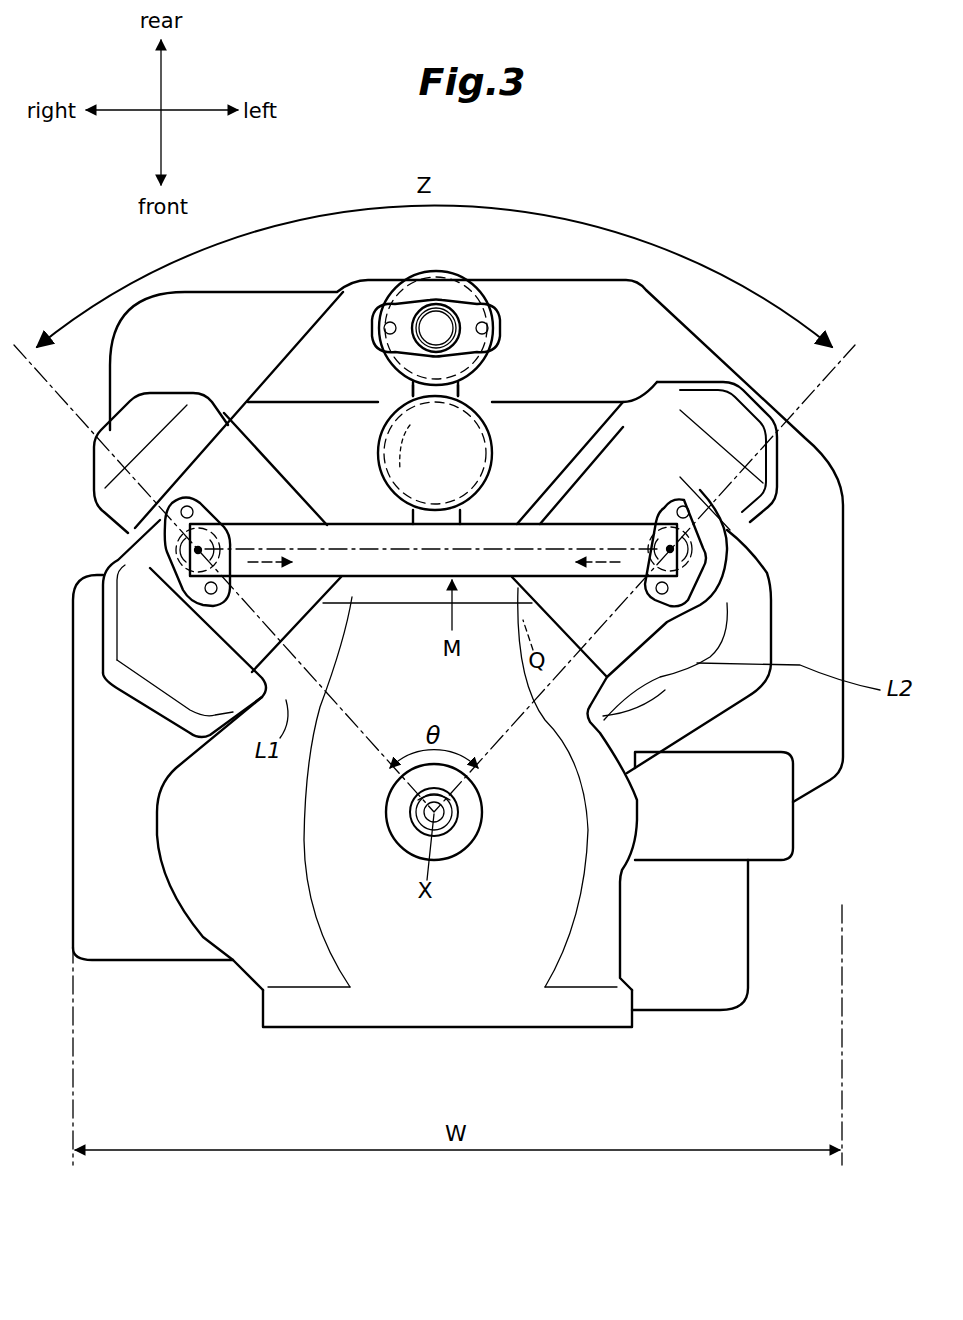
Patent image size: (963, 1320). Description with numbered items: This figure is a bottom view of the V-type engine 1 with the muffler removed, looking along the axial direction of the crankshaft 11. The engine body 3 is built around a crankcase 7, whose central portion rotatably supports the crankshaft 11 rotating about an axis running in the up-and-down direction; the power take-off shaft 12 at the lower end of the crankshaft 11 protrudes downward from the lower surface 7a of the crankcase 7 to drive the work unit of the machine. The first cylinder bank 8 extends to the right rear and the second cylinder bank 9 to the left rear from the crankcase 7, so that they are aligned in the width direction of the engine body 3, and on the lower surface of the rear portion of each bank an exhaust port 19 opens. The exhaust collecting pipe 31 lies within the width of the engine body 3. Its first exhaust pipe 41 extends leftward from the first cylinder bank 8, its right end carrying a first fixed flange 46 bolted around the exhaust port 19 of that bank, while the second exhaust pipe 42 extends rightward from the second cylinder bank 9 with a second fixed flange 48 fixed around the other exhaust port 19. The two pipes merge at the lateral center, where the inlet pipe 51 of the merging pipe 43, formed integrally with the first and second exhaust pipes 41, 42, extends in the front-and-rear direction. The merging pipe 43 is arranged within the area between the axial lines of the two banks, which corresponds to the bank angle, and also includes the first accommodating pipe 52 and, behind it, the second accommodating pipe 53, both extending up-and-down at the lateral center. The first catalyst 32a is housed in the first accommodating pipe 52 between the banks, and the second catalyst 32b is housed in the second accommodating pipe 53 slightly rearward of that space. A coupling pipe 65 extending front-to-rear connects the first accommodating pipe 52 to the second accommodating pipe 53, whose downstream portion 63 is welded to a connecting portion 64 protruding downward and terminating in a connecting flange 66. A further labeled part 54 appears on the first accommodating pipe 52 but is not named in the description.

The engine 1 is at (863, 480).
The engine body 3 is at (292, 1040).
The crankcase 7 is at (292, 938).
The lower surface 7a is at (465, 910).
The first cylinder bank 8 is at (148, 572).
The second cylinder bank 9 is at (732, 589).
The crankshaft 11 is at (455, 827).
The power take-off shaft 12 is at (462, 806).
The exhaust port 19 is at (200, 568).
The exhaust collecting pipe 31 is at (383, 580).
The first catalyst 32a is at (386, 424).
The second catalyst 32b is at (462, 276).
The first exhaust pipe 41 is at (257, 523).
The second exhaust pipe 42 is at (577, 524).
The merging pipe 43 is at (376, 444).
The first fixed flange 46 is at (125, 512).
The second fixed flange 48 is at (713, 542).
The inlet pipe 51 is at (410, 516).
The first accommodating pipe 52 is at (500, 446).
The second accommodating pipe 53 is at (406, 276).
The connecting portion 54 is at (380, 478).
The downstream portion 63 is at (426, 278).
The connecting portion 64 is at (488, 312).
The coupling pipe 65 is at (405, 392).
The connecting flange 66 is at (372, 326).